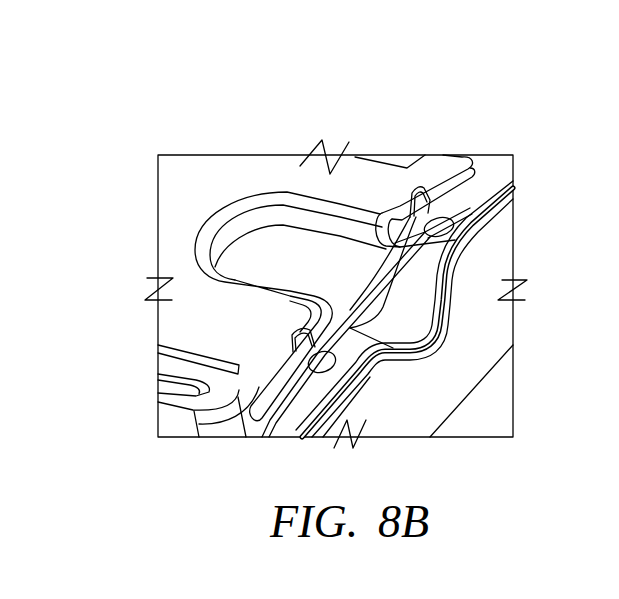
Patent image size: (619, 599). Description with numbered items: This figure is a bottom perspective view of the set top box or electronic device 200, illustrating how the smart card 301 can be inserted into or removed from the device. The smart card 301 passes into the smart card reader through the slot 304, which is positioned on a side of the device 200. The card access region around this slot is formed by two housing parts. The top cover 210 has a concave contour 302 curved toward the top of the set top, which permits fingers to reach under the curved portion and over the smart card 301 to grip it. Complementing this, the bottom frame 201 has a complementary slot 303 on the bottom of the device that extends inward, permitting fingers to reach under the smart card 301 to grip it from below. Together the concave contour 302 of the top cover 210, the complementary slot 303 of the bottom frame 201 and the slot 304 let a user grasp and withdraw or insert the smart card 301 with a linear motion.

The electronic device 200 is at (285, 88).
The bottom frame 201 is at (196, 298).
The top cover 210 is at (460, 378).
The smart card 301 is at (257, 253).
The concave contour 302 is at (408, 314).
The complementary slot 303 is at (349, 215).
The slot 304 is at (352, 292).